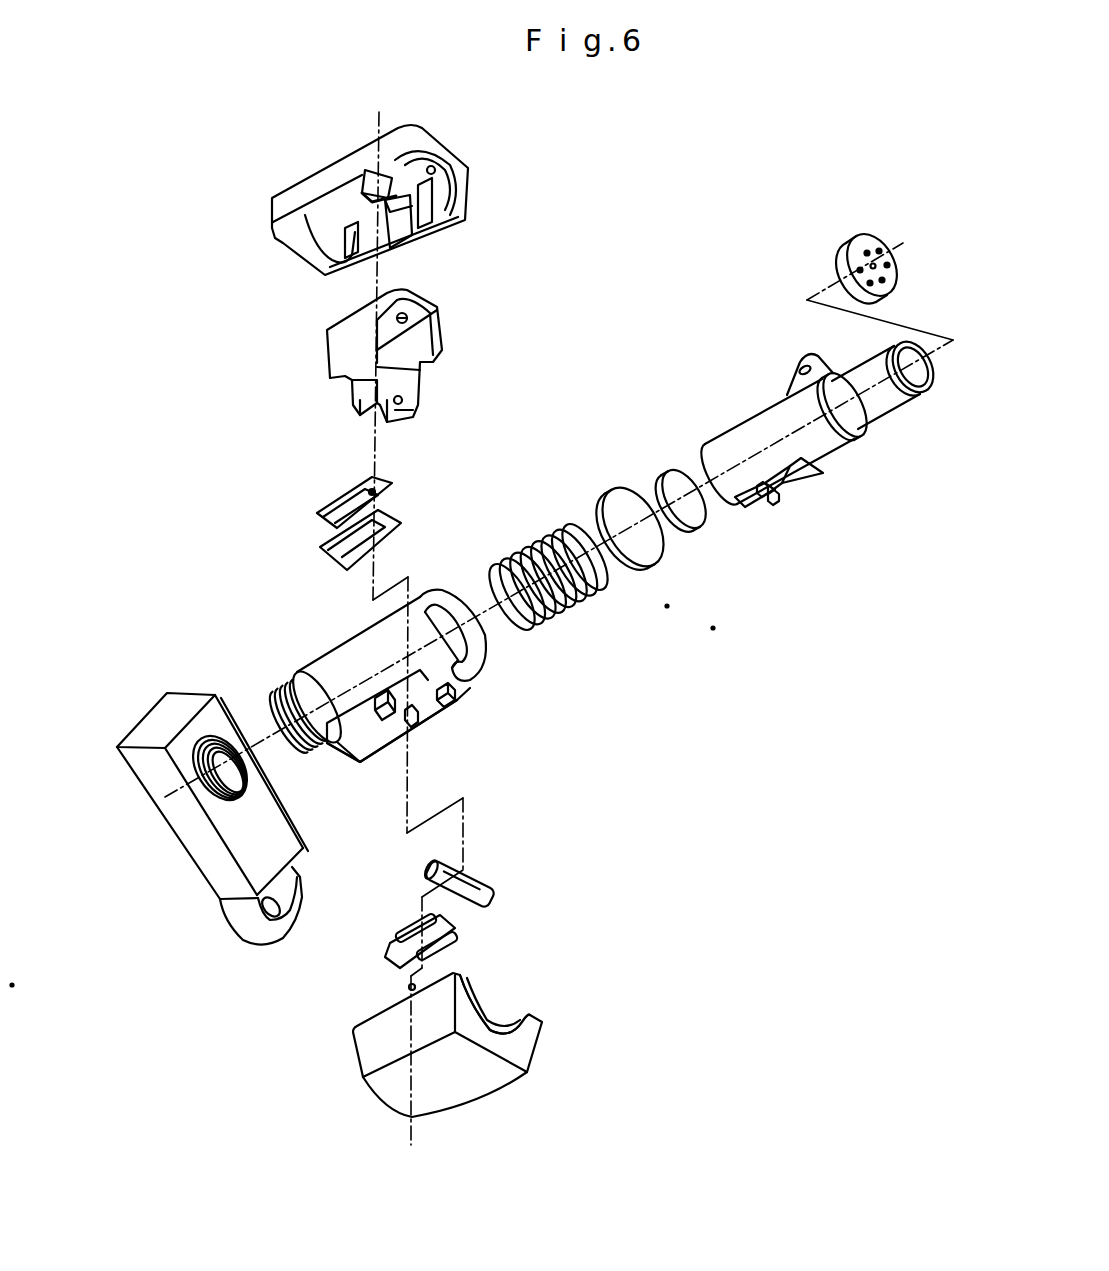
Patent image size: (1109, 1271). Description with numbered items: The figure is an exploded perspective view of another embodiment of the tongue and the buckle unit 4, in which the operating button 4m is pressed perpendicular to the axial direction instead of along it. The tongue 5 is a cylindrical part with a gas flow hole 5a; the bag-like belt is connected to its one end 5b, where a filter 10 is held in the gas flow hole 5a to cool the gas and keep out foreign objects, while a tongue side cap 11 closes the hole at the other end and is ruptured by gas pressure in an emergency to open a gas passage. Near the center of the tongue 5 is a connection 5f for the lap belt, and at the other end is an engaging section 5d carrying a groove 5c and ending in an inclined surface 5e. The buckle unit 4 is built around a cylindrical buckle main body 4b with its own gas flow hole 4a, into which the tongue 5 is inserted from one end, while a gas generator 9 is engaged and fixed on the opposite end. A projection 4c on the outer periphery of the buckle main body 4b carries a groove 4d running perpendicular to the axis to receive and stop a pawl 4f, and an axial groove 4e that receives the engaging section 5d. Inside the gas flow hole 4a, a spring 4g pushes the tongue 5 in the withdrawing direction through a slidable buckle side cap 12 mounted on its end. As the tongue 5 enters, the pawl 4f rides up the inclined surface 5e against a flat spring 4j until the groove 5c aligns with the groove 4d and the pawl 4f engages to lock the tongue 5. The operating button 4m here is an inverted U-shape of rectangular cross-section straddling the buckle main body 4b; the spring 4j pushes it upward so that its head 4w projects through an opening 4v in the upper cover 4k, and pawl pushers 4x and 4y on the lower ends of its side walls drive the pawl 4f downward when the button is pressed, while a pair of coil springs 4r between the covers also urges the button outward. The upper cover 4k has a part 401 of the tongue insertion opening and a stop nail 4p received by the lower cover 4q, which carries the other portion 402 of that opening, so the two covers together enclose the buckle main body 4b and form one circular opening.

The buckle unit 4 is at (270, 591).
The gas flow hole 4a is at (473, 650).
The buckle main body 4b is at (308, 677).
The projection 4c is at (358, 752).
The groove 4d is at (372, 707).
The groove 4e is at (453, 693).
The pawl 4f is at (497, 890).
The spring 4g is at (528, 548).
The spring 4j is at (395, 925).
The upper cover 4k is at (280, 208).
The operating button 4m is at (353, 343).
The stop nail 4p is at (408, 987).
The lower cover 4q is at (387, 1088).
The coil springs 4r is at (315, 517).
The opening 4v is at (362, 175).
The head 4w is at (420, 305).
The pawl pusher 4x is at (360, 397).
The pawl pusher 4y is at (417, 413).
The part of opening 401 is at (435, 168).
The other portion of opening 402 is at (513, 1027).
The tongue 5 is at (780, 410).
The gas flow hole 5a is at (925, 297).
The one end 5b is at (880, 413).
The groove 5c is at (773, 505).
The engaging section 5d is at (793, 490).
The inclined surface 5e is at (760, 497).
The connection 5f is at (803, 360).
The gas generator 9 is at (203, 882).
The filter 10 is at (848, 250).
The tongue side cap 11 is at (672, 478).
The buckle side cap 12 is at (615, 497).